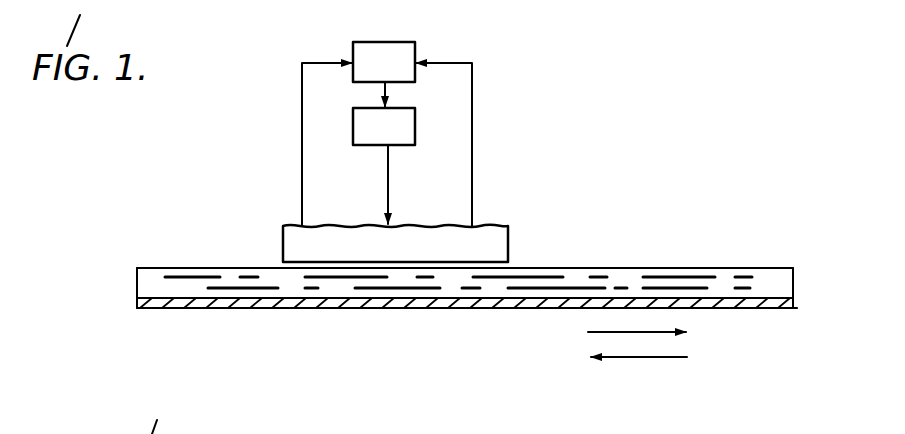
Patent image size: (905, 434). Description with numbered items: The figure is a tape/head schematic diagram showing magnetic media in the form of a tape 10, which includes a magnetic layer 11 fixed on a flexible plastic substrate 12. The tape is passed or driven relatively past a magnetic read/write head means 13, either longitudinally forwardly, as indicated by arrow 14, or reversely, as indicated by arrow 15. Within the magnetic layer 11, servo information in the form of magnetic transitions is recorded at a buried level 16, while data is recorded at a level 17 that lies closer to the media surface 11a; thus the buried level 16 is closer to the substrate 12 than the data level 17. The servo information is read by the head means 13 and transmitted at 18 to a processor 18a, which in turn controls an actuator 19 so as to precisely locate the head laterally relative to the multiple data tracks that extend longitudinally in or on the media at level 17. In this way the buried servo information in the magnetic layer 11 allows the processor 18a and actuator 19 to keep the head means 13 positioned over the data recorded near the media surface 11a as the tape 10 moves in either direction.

The tape 10 is at (752, 240).
The magnetic layer 11 is at (783, 282).
The media surface 11a is at (634, 268).
The flexible plastic substrate 12 is at (763, 309).
The magnetic read/write head means 13 is at (522, 232).
The arrow 14 is at (590, 332).
The arrow 15 is at (638, 358).
The buried level 16 is at (217, 287).
The level 17 is at (192, 276).
The transmission of servo information 18 is at (302, 128).
The processor 18a is at (397, 52).
The actuator 19 is at (405, 133).